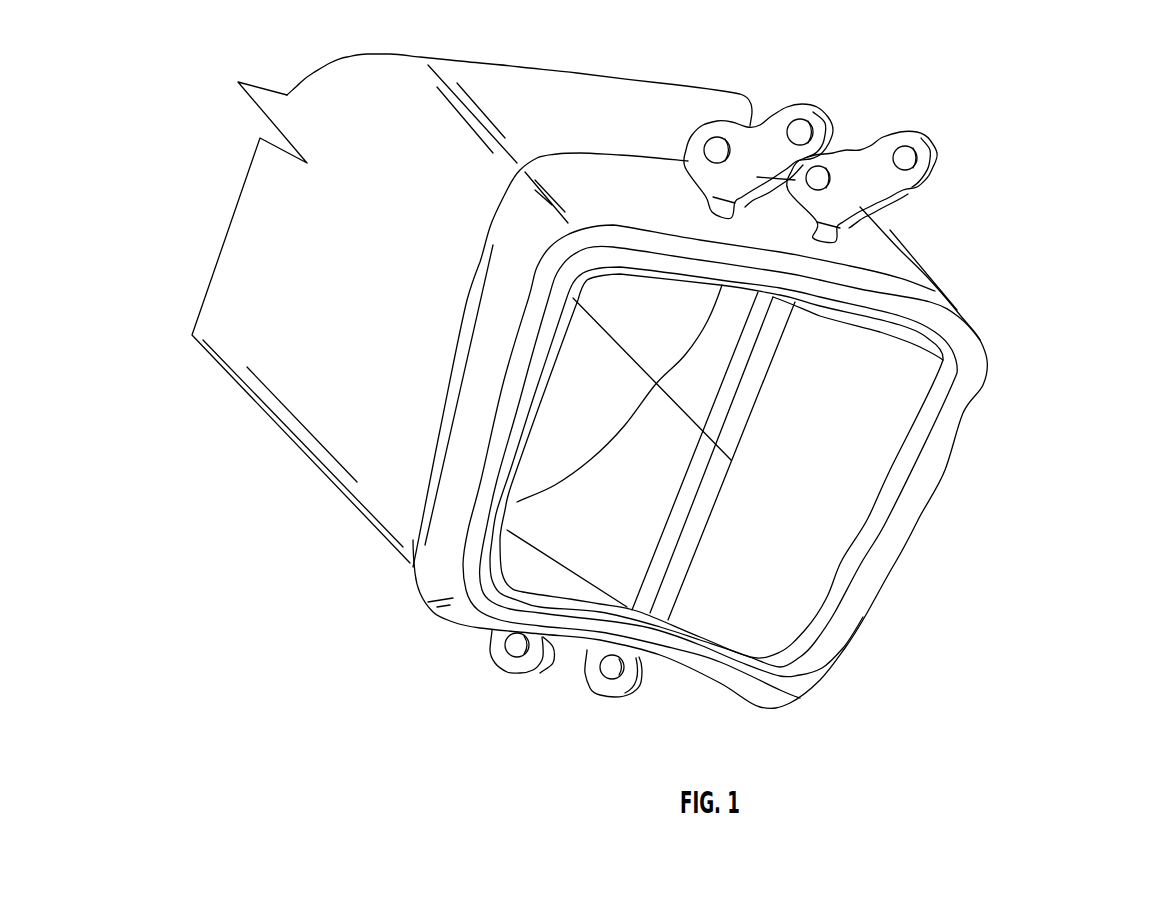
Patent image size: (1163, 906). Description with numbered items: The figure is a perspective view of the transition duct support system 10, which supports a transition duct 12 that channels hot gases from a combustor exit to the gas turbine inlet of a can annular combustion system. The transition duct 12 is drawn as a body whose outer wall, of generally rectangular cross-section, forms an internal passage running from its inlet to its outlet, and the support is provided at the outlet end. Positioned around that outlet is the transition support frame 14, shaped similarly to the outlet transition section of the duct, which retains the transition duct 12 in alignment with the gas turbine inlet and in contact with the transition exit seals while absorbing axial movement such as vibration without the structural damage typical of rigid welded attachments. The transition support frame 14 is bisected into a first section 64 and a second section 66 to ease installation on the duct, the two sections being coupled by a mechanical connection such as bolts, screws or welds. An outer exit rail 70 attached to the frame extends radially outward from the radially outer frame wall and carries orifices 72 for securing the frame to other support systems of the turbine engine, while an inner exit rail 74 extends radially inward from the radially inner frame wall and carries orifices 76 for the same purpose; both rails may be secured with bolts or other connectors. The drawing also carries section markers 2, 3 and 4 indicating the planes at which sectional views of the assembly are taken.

The transition duct support system 10 is at (1068, 131).
The transition duct 12 is at (897, 447).
The transition support frame 14 is at (917, 250).
The first section 64 is at (457, 352).
The second section 66 is at (985, 348).
The outer exit rail 70 is at (753, 130).
The orifices 72 is at (707, 147).
The inner exit rail 74 is at (527, 673).
The orifices 76 is at (517, 672).
The section line 2- 2 is at (447, 371).
The section line 3- 3 is at (795, 265).
The section line 4- 4 is at (703, 243).